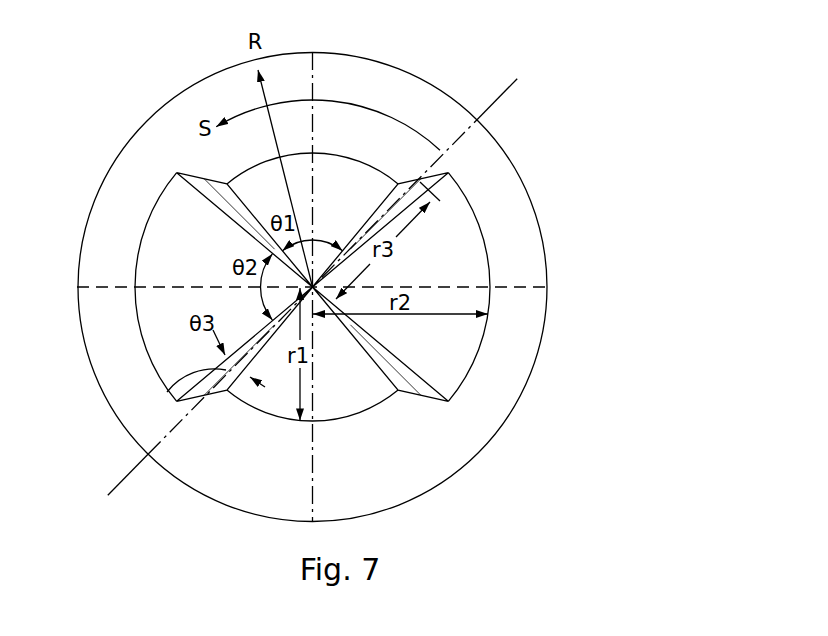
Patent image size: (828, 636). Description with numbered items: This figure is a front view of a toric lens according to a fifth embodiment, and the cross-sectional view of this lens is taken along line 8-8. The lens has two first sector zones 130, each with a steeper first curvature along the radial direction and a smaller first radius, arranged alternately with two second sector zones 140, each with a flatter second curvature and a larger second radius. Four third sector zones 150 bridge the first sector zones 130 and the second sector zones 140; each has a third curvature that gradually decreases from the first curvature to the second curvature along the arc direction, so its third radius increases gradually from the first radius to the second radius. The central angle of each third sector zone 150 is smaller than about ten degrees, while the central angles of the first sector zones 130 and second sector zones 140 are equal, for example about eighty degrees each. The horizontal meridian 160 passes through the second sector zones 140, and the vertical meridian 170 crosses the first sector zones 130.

The section line 8- 8 is at (523, 74).
The first sector zones 130 is at (312, 287).
The second sector zones 140 is at (312, 287).
The third sector zones 150 is at (202, 178).
The horizontal meridian 160 is at (519, 288).
The vertical meridian 170 is at (317, 89).